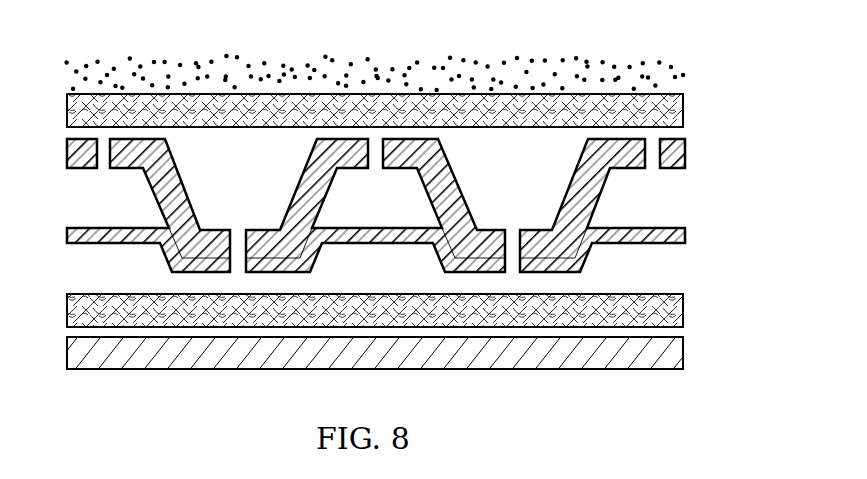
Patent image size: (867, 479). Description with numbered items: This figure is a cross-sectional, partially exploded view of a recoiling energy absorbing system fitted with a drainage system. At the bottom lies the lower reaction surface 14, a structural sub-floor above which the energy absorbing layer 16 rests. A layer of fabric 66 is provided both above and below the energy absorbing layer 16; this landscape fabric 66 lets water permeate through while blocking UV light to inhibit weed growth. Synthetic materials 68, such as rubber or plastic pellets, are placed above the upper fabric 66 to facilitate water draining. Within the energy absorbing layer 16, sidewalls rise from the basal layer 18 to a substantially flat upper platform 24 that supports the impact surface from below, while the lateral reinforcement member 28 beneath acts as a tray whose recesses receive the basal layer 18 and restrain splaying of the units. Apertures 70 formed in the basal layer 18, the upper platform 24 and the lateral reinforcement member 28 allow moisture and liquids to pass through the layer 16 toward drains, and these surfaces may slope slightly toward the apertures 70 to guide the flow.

The synthetic materials 68 is at (683, 56).
The fabric 66 is at (683, 112).
The energy absorbing layer 16 is at (395, 212).
The upper platform 24 is at (347, 150).
The lateral reinforcement member 28 is at (118, 228).
The apertures 70 is at (278, 213).
The basal layer 18 is at (472, 266).
The lower reaction surface 14 is at (565, 369).